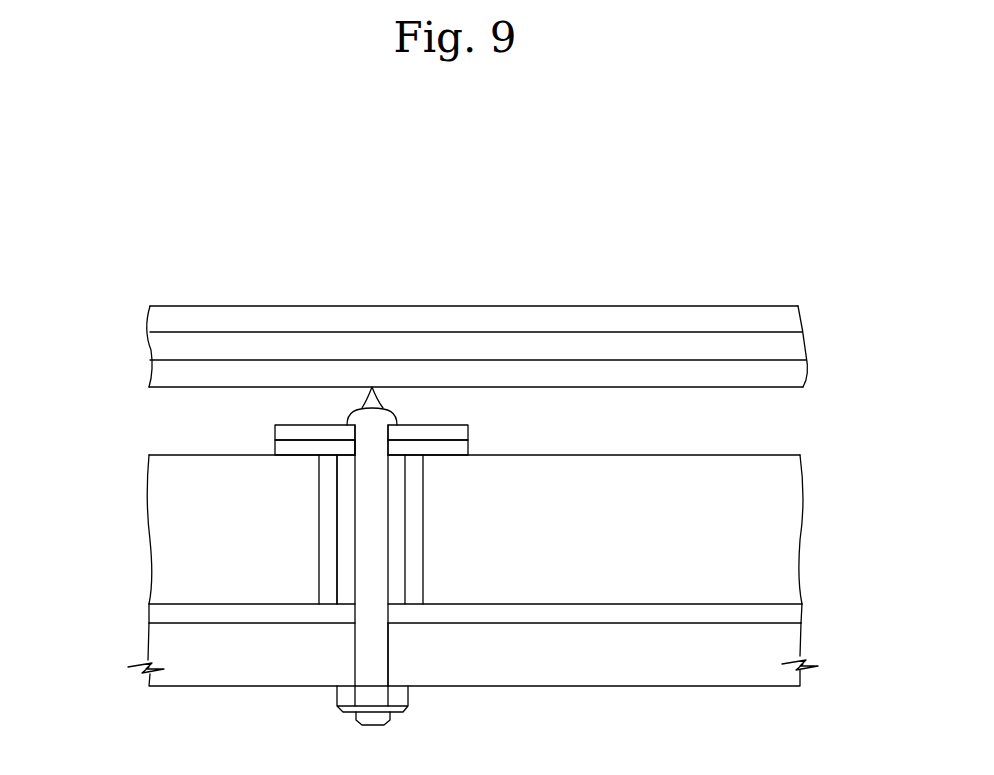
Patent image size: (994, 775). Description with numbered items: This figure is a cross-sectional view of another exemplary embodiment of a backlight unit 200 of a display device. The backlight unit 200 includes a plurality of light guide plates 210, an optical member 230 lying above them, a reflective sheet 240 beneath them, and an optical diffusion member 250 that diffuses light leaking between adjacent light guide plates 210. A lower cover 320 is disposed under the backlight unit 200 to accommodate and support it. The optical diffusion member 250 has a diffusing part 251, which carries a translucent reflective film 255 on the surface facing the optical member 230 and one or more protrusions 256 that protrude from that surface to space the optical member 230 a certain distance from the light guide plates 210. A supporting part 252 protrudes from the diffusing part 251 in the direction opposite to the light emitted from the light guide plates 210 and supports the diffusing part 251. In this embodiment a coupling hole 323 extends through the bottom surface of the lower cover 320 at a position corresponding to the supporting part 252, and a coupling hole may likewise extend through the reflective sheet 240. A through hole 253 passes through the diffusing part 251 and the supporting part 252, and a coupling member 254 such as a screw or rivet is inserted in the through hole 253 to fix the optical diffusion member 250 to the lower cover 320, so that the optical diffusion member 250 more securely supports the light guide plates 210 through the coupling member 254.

The backlight unit 200 is at (688, 236).
The optical member 230 is at (160, 350).
The light guide plates 210 is at (160, 535).
The reflective sheet 240 is at (160, 612).
The lower cover 320 is at (160, 647).
The optical diffusion member 250 is at (470, 437).
The reflective film 255 is at (285, 434).
The diffusing part 251 is at (285, 449).
The coupling member 254 is at (370, 496).
The protrusion 256 is at (373, 387).
The through hole 253 is at (345, 451).
The supporting part 252 is at (345, 592).
The coupling hole 323 is at (393, 647).